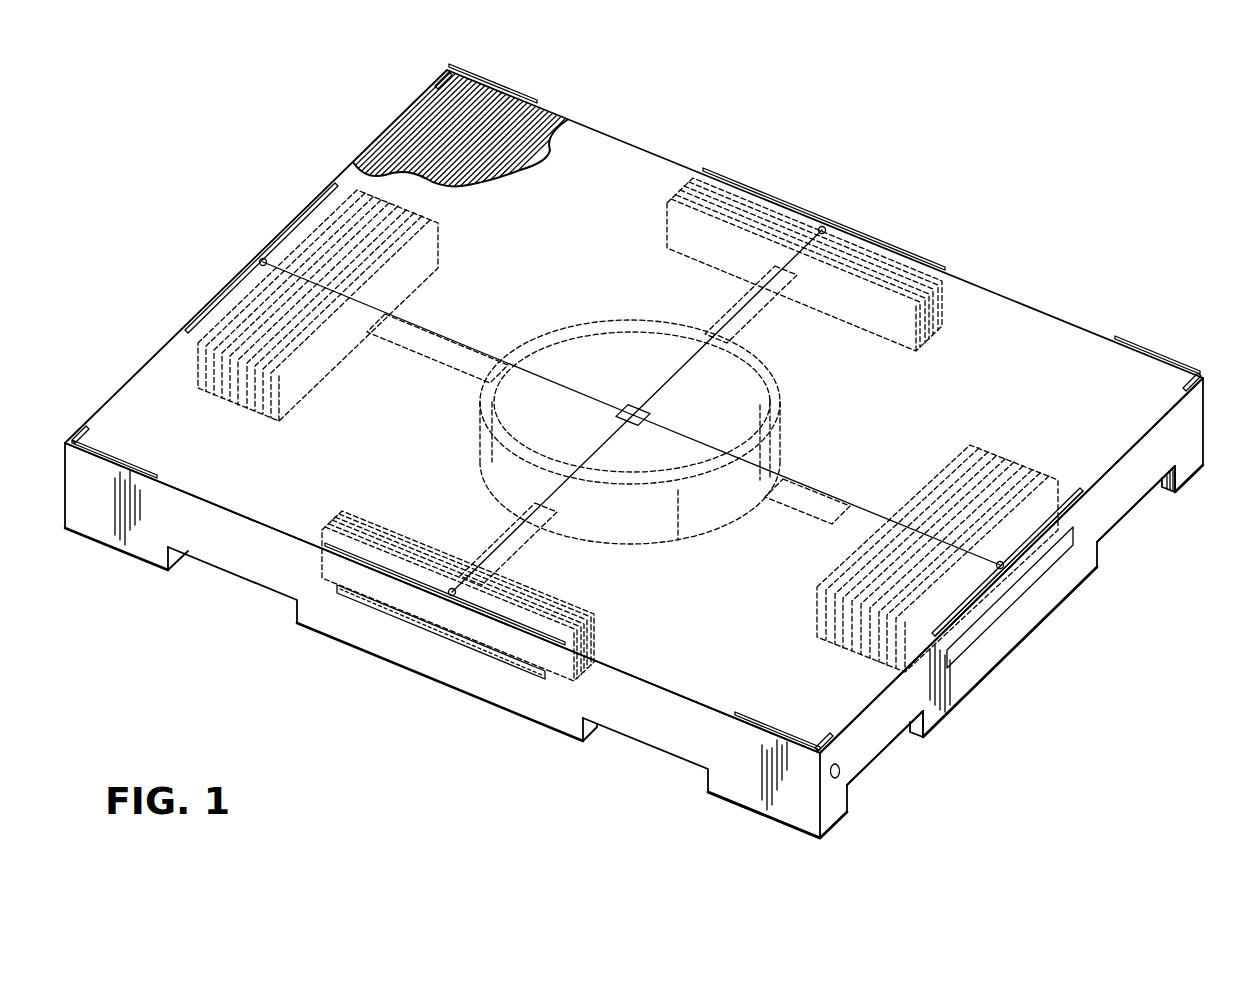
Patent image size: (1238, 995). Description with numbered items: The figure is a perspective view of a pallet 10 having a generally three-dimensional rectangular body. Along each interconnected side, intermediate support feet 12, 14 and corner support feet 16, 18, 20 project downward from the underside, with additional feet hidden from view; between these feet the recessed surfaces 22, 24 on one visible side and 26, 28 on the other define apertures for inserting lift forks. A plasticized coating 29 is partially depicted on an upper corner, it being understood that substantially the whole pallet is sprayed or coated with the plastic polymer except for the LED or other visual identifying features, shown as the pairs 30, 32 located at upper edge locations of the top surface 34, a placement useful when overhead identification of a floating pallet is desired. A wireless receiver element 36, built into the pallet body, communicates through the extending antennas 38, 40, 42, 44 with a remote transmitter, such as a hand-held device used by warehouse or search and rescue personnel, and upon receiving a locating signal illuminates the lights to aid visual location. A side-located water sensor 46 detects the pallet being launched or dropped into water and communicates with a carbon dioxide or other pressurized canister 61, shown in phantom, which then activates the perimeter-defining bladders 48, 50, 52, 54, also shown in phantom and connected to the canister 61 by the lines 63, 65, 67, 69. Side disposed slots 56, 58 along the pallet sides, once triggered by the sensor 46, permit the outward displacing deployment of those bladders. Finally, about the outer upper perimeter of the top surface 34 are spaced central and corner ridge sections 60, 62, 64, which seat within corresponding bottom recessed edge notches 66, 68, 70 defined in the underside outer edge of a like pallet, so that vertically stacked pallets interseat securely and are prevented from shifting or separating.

The pallet 10 is at (364, 120).
The intermediate side support foot 12 is at (458, 674).
The intermediate side support foot 14 is at (965, 690).
The corner support foot 16 is at (150, 546).
The corner support foot 18 is at (740, 790).
The corner support foot 20 is at (1190, 466).
The intermediate aperture surface 22 is at (238, 578).
The intermediate aperture surface 24 is at (643, 745).
The intermediate aperture surface 26 is at (883, 753).
The intermediate aperture surface 28 is at (1118, 520).
The plasticized coating 29 is at (487, 105).
The LED visual identifying feature pair 30 is at (262, 259).
The LED visual identifying feature pair 32 is at (449, 593).
The top surface 34 is at (578, 253).
The wireless receiver element 36 is at (630, 405).
The antenna 38 is at (733, 322).
The antenna 40 is at (825, 490).
The antenna 42 is at (555, 492).
The antenna 44 is at (407, 328).
The water sensor 46 is at (840, 775).
The bladder 48 is at (410, 528).
The bladder 50 is at (937, 465).
The bladder 52 is at (667, 200).
The bladder 54 is at (437, 205).
The side disposed slot 56 is at (522, 664).
The side disposed slot 58 is at (977, 638).
The ridge section 60 is at (765, 722).
The pressurized canister 61 is at (478, 440).
The ridge section 62 is at (957, 603).
The line 63 is at (525, 553).
The ridge section 64 is at (1148, 357).
The line 65 is at (820, 507).
The bottom recessed edge notch 66 is at (807, 836).
The line 67 is at (790, 316).
The bottom recessed edge notch 68 is at (922, 737).
The line 69 is at (448, 328).
The bottom recessed edge notch 70 is at (1176, 493).